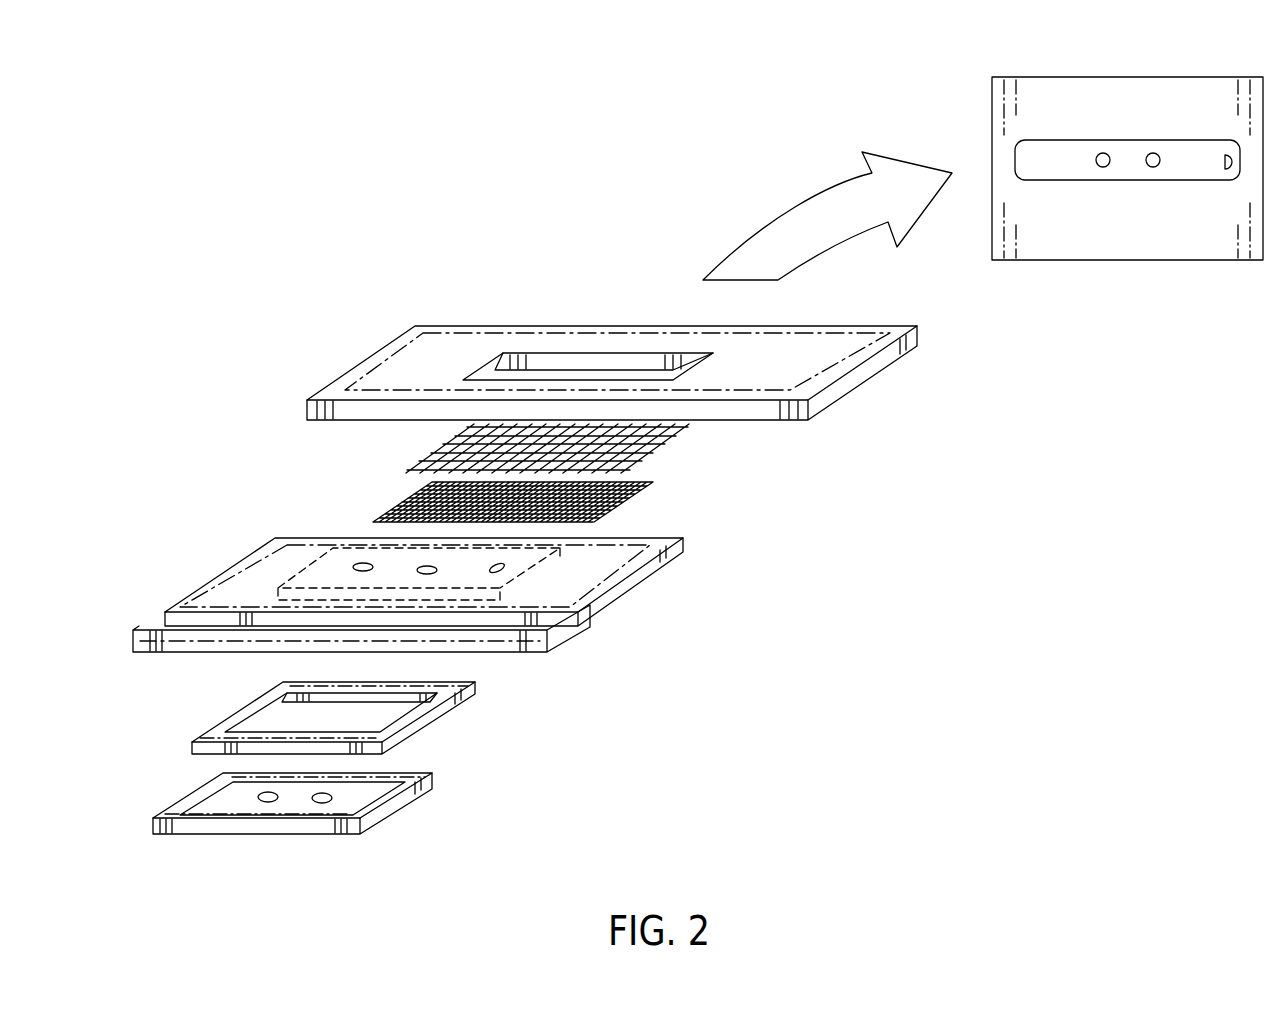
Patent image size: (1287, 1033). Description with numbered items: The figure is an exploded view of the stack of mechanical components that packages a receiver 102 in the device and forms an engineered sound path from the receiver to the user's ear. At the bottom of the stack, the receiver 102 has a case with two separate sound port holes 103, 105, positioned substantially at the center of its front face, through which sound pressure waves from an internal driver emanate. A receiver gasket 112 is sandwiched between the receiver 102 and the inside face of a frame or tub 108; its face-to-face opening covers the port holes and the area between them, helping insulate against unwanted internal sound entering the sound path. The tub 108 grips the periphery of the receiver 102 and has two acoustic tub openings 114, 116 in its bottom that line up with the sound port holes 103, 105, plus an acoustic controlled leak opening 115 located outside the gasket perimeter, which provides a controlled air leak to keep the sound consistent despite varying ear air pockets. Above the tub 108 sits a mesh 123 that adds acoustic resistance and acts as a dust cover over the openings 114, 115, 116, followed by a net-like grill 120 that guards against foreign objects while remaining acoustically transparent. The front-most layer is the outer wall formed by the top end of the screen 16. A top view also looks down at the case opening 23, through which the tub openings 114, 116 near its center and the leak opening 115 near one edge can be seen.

The screen 16 is at (873, 342).
The acoustic device case opening 23 is at (533, 358).
The receiver 102 is at (397, 793).
The sound port hole 103 is at (333, 802).
The sound port hole 105 is at (333, 802).
The tub 108 is at (643, 557).
The receiver gasket 112 is at (430, 704).
The acoustic tub opening 114 is at (443, 562).
The acoustic tub opening 116 is at (443, 562).
The acoustic controlled leak opening 115 is at (500, 571).
The grill 120 is at (643, 455).
The mesh 123 is at (635, 500).